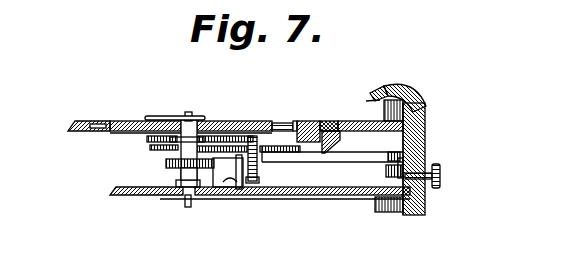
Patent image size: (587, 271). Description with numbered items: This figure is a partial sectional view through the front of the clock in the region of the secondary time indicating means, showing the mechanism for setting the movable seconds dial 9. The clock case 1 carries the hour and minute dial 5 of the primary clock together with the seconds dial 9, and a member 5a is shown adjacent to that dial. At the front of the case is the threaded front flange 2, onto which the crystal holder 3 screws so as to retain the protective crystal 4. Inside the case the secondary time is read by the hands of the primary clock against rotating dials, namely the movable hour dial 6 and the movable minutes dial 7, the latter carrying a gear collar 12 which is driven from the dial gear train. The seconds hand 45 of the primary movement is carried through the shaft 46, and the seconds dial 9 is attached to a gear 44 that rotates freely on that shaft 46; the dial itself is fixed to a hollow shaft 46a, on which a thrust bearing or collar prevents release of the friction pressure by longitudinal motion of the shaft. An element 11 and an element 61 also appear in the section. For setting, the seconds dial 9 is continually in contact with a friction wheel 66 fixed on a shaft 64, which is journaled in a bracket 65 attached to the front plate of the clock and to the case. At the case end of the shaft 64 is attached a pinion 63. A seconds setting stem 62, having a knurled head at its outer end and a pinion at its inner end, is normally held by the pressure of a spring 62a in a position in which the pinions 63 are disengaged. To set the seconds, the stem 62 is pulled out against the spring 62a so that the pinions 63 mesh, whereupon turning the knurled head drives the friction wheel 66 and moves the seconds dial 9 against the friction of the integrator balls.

The clock case 1 is at (425, 158).
The threaded front flange 2 is at (424, 110).
The crystal holder 3 is at (408, 95).
The protective crystal 4 is at (380, 85).
The hour and minute dial 5 is at (371, 127).
The cover plate insert 5a is at (78, 120).
The movable hour dial 6 is at (338, 126).
The movable minutes dial 7 is at (312, 126).
The seconds dial 9 is at (229, 126).
The shaft 11 is at (332, 166).
The gear collar 12 is at (298, 125).
The gear 44 is at (166, 162).
The seconds hand 45 is at (160, 116).
The shaft 46 is at (191, 115).
The hollow shaft 46a is at (181, 175).
The knob 61 is at (440, 175).
The seconds setting stem 62 is at (424, 196).
The spring 62a is at (373, 199).
The pinion 63 is at (423, 150).
The shaft 64 is at (300, 197).
The bracket 65 is at (229, 199).
The friction wheel 66 is at (258, 197).